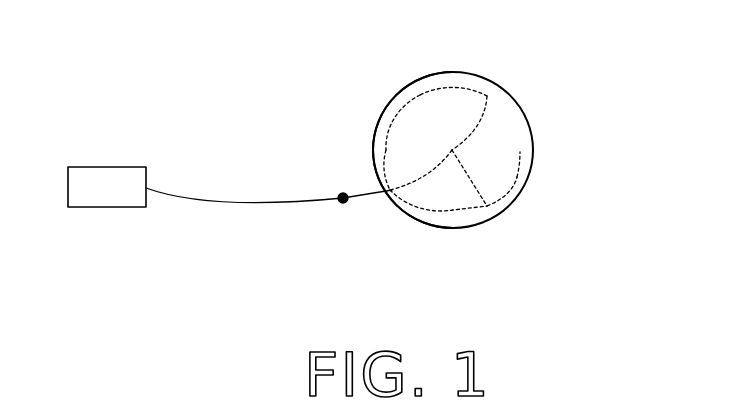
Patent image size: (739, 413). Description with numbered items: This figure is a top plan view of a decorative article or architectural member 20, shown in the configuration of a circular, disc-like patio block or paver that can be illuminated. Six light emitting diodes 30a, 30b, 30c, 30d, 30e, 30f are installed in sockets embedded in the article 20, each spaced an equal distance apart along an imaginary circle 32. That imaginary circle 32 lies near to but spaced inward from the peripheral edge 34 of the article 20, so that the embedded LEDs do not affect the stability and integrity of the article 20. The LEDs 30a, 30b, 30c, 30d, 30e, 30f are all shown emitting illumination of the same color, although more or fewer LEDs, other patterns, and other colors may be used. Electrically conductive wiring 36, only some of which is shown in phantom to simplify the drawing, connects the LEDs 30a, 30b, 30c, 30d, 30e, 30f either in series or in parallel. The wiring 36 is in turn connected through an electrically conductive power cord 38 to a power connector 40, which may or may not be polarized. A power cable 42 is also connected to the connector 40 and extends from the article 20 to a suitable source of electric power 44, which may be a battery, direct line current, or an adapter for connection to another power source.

The decorative article 20 is at (478, 72).
The LED 30a is at (488, 94).
The LED 30b is at (522, 151).
The LED 30c is at (488, 209).
The LED 30d is at (420, 209).
The LED 30e is at (383, 150).
The LED 30f is at (419, 92).
The imaginary circle 32 is at (450, 82).
The peripheral edge 34 is at (373, 126).
The electrically conductive wiring 36 is at (489, 117).
The power cord 38 is at (402, 186).
The power connector 40 is at (339, 207).
The power cable 42 is at (187, 204).
The source of electric power 44 is at (102, 165).